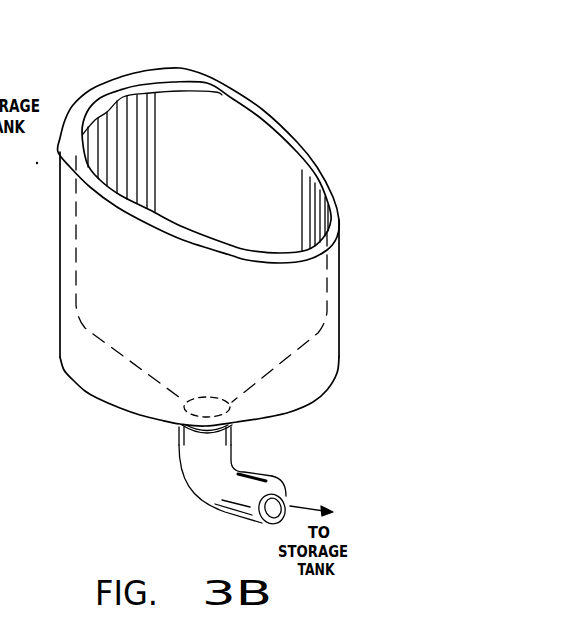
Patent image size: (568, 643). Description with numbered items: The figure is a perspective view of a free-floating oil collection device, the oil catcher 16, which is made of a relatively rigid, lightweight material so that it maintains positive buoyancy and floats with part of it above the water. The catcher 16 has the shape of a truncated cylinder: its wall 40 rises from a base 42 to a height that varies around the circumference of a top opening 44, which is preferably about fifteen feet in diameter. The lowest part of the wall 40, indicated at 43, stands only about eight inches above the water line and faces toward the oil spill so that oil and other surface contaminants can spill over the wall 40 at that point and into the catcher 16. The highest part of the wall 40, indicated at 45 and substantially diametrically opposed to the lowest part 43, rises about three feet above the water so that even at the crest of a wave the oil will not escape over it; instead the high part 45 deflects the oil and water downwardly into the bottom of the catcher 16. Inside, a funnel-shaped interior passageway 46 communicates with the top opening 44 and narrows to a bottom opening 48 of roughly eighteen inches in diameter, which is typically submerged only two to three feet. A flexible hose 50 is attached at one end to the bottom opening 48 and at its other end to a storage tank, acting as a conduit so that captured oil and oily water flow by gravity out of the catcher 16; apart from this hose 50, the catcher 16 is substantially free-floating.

The oil catcher 16 is at (184, 55).
The wall 40 is at (84, 353).
The base 42 is at (133, 409).
The lowest part of wall 43 is at (307, 252).
The top opening 44 is at (244, 159).
The highest part of wall 45 is at (113, 86).
The funnel-shaped interior passageway 46 is at (212, 323).
The bottom opening 48 is at (208, 400).
The flexible hose 50 is at (244, 473).